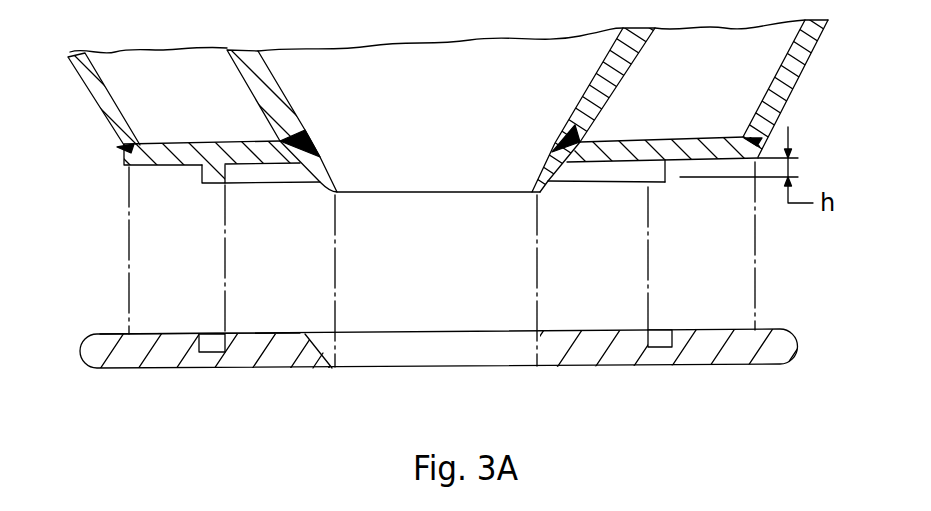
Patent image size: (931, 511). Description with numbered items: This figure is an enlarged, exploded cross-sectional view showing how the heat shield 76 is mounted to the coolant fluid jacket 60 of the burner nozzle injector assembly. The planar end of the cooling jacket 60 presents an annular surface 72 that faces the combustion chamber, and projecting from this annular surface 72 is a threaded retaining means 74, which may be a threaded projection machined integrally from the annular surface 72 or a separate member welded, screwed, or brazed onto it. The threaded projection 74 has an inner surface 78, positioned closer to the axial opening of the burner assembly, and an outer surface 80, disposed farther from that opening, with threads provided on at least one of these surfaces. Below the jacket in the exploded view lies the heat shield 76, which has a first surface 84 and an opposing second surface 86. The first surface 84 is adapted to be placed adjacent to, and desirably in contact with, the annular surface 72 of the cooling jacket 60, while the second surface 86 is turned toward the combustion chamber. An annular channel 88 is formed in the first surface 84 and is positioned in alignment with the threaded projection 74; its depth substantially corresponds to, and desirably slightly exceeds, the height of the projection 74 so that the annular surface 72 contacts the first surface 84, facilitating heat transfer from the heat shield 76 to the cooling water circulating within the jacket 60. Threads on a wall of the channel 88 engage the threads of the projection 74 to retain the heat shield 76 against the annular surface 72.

The coolant fluid jacket 60 is at (96, 107).
The annular surface 72 is at (162, 167).
The threaded retaining means 74 is at (668, 175).
The heat shield 76 is at (436, 338).
The inner surface 78 is at (664, 172).
The outer surface 80 is at (202, 173).
The first surface 84 is at (102, 332).
The second surface 86 is at (112, 368).
The annular channel 88 is at (661, 323).